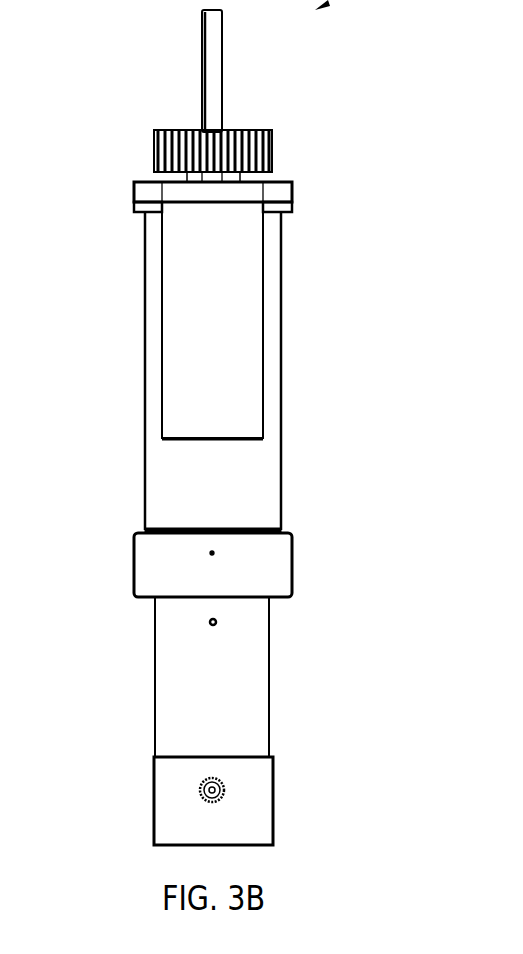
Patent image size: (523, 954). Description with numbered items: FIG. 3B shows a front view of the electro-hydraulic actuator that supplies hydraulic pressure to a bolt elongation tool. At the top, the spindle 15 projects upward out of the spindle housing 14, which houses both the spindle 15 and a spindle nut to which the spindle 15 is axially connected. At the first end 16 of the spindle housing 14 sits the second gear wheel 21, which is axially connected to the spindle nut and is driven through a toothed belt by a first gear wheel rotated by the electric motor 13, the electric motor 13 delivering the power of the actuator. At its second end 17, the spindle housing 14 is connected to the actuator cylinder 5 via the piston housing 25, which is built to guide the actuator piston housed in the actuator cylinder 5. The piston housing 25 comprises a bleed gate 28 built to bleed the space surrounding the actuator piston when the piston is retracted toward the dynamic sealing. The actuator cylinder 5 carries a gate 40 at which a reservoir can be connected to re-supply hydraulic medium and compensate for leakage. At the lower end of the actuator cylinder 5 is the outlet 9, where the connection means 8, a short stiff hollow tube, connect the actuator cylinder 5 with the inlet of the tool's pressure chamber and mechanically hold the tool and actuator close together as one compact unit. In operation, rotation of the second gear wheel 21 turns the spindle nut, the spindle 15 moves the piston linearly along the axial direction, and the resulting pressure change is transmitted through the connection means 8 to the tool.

The spindle 15 is at (207, 62).
The second gear wheel 21 is at (255, 148).
The first end 16 is at (150, 176).
The electric motor 13 is at (238, 305).
The spindle housing 14 is at (255, 484).
The second end 17 is at (143, 526).
The piston housing 25 is at (262, 565).
The bleed gate 28 is at (207, 554).
The actuator cylinder 5 is at (242, 705).
The gate 40 is at (209, 623).
The connection means 8 is at (215, 790).
The outlet 9 is at (200, 781).